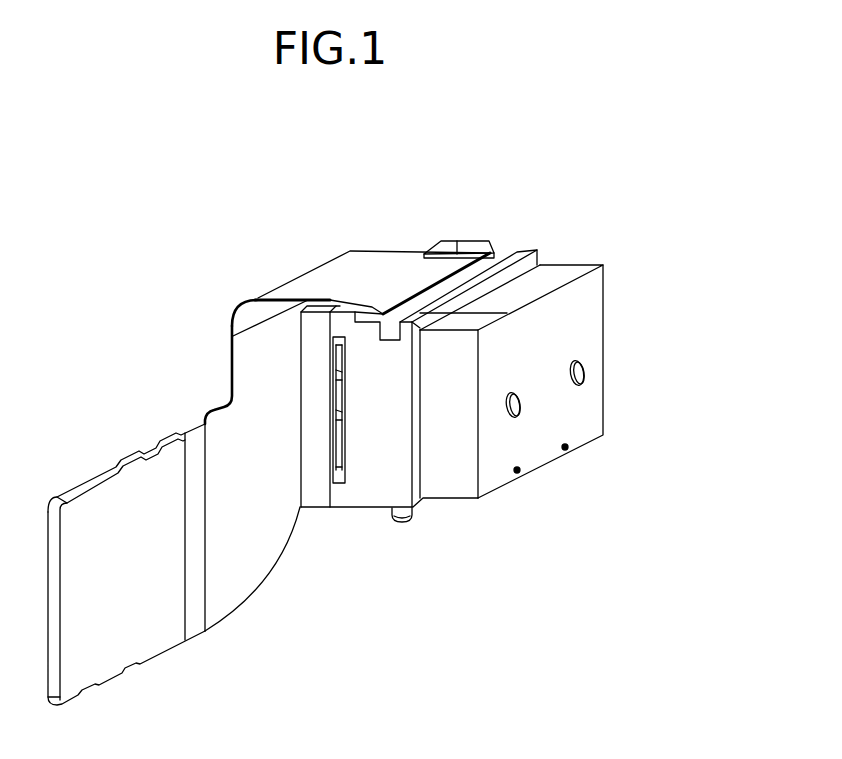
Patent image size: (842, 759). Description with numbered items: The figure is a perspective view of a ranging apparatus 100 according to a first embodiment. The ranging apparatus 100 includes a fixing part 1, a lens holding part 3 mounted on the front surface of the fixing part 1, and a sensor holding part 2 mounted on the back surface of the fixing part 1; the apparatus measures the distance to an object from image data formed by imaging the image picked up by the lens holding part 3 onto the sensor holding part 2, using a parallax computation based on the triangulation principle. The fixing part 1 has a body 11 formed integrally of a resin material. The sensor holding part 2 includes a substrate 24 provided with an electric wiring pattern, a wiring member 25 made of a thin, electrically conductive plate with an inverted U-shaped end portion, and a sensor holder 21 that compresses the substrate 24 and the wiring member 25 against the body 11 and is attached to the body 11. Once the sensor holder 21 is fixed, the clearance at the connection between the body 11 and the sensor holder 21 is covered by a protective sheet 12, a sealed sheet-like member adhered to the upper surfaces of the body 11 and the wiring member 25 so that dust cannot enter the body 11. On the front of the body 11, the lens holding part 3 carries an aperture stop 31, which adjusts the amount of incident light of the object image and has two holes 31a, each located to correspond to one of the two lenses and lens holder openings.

The ranging apparatus 100 is at (608, 192).
The fixing part 1 is at (550, 246).
The sensor holding part 2 is at (473, 233).
The lens holding part 3 is at (608, 256).
The body 11 is at (373, 483).
The protective sheet 12 is at (403, 282).
The sensor holder 21 is at (310, 483).
The substrate 24 is at (337, 445).
The wiring member 25 is at (263, 383).
The aperture stop 31 is at (590, 417).
The holes 31a is at (567, 382).